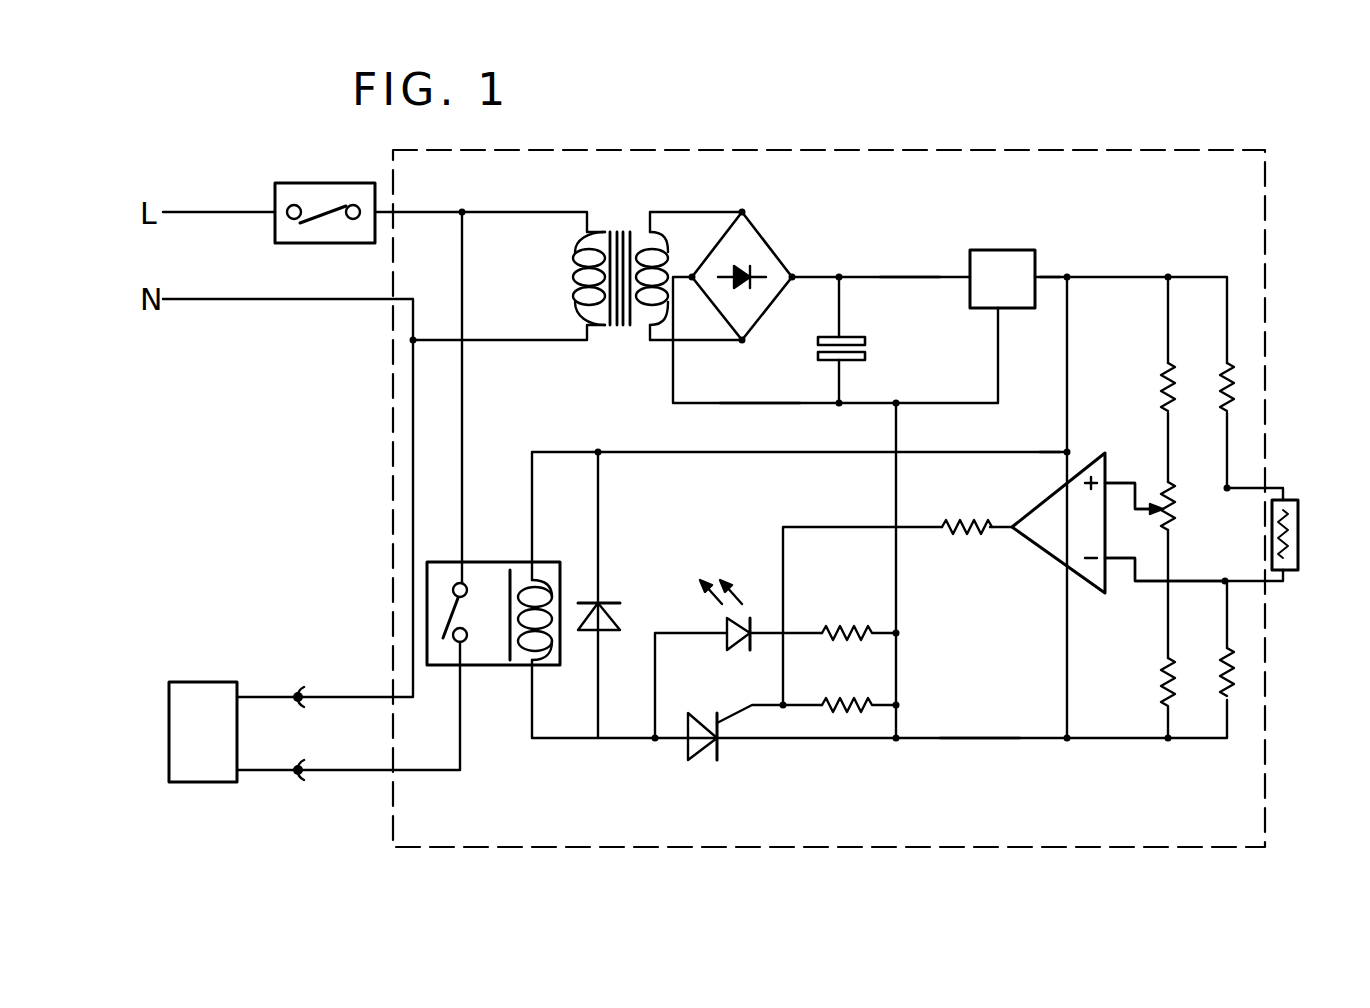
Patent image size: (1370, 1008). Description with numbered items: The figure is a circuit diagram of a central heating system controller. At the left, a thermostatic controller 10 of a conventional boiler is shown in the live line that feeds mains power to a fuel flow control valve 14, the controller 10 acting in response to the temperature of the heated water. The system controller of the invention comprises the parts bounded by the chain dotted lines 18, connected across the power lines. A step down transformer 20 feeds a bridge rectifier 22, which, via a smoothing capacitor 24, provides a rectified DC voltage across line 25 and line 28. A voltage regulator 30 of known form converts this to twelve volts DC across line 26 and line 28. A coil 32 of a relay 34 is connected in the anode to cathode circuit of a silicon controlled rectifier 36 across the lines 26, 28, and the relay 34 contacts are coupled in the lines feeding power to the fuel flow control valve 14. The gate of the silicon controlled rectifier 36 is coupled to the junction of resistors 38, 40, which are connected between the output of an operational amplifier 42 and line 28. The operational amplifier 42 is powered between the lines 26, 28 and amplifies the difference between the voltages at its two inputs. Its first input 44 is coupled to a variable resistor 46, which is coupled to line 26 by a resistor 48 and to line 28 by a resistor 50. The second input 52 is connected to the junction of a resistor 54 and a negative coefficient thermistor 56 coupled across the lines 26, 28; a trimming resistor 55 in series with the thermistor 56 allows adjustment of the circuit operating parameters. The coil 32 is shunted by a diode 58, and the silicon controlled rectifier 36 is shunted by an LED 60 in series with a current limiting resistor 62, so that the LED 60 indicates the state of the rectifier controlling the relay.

The thermostatic controller 10 is at (332, 183).
The fuel flow control valve 14 is at (195, 784).
The chain dotted lines 18 is at (827, 148).
The step down transformer 20 is at (617, 232).
The bridge rectifier 22 is at (770, 250).
The smoothing capacitor 24 is at (868, 343).
The line 25 is at (905, 277).
The line 26 is at (1067, 277).
The line 28 is at (770, 403).
The voltage regulator 30 is at (998, 250).
The coil 32 is at (554, 578).
The relay 34 is at (440, 597).
The silicon controlled rectifier 36 is at (697, 762).
The resistor 38 is at (984, 546).
The resistor 40 is at (853, 703).
The operational amplifier 42 is at (1058, 523).
The first input 44 is at (1121, 480).
The variable resistor 46 is at (1180, 510).
The resistor 48 is at (1160, 390).
The resistor 50 is at (1160, 688).
The inverting input 52 is at (1121, 568).
The resistor 54 is at (1240, 678).
The trimming resistor 55 is at (1240, 386).
The negative coefficient thermistor 56 is at (1300, 525).
The diode 58 is at (625, 617).
The LED 60 is at (738, 650).
The current limiting resistor 62 is at (853, 630).